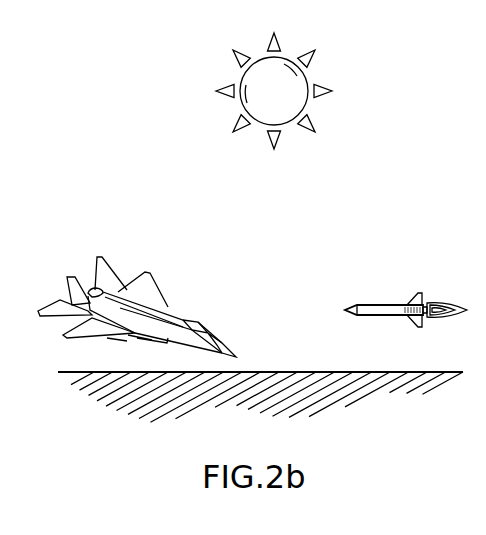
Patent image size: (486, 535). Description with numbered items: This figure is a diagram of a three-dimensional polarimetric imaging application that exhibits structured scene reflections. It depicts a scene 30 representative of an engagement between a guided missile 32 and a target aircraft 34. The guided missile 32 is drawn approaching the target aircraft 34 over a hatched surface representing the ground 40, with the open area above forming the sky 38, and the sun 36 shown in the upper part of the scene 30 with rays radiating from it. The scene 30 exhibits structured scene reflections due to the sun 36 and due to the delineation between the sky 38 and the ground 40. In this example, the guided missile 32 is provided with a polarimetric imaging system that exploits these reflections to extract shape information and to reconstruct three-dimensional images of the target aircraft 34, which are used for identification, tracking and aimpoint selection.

The scene 30 is at (404, 121).
The guided missile 32 is at (378, 305).
The target aircraft 34 is at (150, 273).
The sun 36 is at (232, 92).
The sky 38 is at (287, 223).
The ground 40 is at (237, 432).